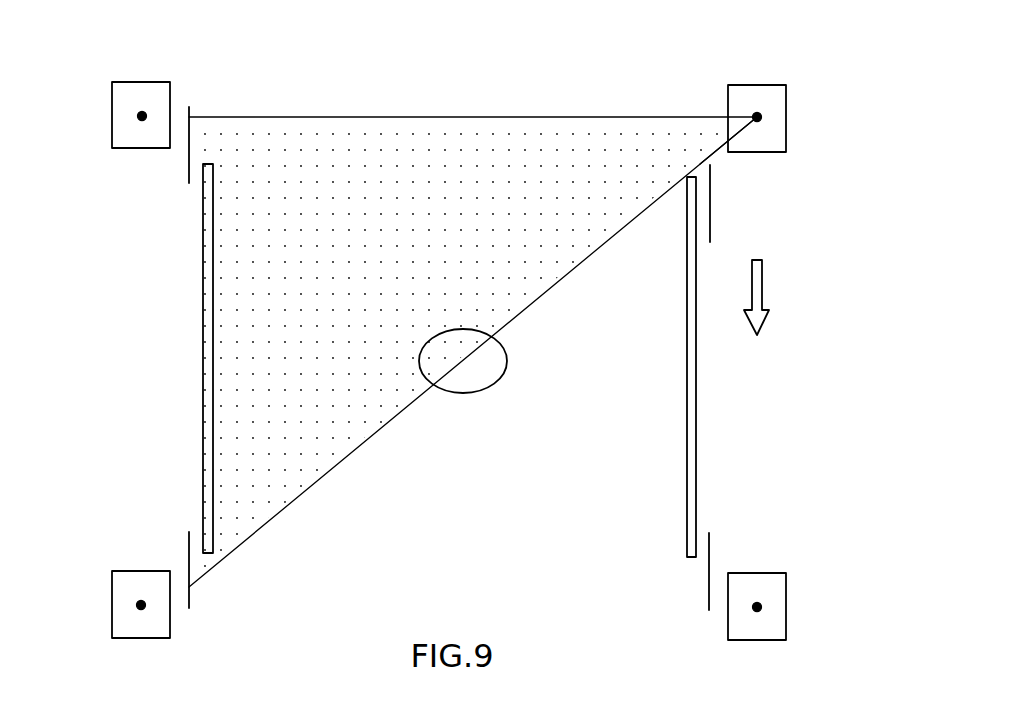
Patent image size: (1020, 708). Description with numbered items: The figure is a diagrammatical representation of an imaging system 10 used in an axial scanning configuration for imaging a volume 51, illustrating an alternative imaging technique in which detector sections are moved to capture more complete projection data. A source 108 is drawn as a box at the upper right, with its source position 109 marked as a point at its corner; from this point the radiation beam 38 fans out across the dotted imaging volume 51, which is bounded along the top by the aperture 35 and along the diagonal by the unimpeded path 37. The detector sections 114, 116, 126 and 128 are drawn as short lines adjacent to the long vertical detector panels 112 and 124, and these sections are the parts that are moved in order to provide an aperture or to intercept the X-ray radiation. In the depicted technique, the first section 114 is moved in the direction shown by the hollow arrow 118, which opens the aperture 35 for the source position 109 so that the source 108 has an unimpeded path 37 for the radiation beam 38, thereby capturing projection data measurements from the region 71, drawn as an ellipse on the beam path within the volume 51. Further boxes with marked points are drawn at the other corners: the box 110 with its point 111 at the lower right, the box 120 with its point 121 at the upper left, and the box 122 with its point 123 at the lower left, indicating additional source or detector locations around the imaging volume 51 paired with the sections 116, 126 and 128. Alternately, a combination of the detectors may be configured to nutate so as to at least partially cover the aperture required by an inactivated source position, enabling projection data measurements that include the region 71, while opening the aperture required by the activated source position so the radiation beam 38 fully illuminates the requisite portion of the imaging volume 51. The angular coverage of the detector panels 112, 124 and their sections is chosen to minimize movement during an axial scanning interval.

The imaging system 10 is at (725, 27).
The aperture 35 is at (738, 117).
The unimpeded path 37 is at (720, 148).
The radiation beam 38 is at (333, 452).
The volume 51 is at (486, 504).
The region 71 is at (487, 375).
The source 108 is at (786, 125).
The source position 109 is at (760, 116).
The detector housing 110 is at (786, 607).
The detector point 111 is at (757, 607).
The right panel 112 is at (687, 440).
The section 114 is at (710, 205).
The detector section 116 is at (709, 548).
The direction 118 is at (762, 290).
The upper left housing 120 is at (112, 116).
The upper left emitting point 121 is at (142, 116).
The lower left housing 122 is at (112, 605).
The lower left detecting point 123 is at (141, 605).
The left panel 124 is at (203, 375).
The detector section 126 is at (189, 165).
The detector section 128 is at (189, 598).